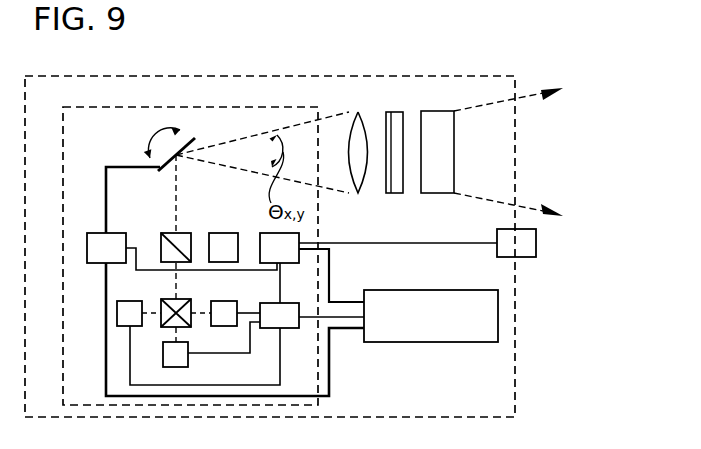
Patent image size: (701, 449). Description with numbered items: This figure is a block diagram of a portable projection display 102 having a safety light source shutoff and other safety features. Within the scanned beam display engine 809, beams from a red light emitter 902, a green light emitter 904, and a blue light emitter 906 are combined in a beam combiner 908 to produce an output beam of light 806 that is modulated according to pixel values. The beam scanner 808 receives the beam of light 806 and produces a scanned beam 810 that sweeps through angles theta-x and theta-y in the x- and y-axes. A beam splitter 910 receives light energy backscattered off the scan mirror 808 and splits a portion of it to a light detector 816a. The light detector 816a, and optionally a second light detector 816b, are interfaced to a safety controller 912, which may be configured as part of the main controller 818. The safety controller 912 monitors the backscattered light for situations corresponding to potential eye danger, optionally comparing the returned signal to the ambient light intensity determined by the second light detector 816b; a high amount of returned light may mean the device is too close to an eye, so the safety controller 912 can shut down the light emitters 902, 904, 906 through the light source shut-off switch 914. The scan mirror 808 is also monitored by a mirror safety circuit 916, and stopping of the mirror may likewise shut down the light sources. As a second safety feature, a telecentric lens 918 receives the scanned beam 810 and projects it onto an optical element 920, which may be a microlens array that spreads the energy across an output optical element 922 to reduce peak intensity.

The scanned beam display system 102 is at (413, 76).
The scanned beam display engine 809 is at (117, 106).
The beam scanner 808 is at (193, 139).
The scanned beam 810 is at (232, 140).
The telecentric lens 918 is at (355, 122).
The optical element 920 is at (386, 112).
The output optical element 922 is at (432, 111).
The beam of light 806 is at (175, 196).
The beam splitter 910 is at (161, 243).
The light detector 816a is at (222, 233).
The second light detector 816b is at (497, 250).
The mirror safety circuit 916 is at (225, 281).
The safety controller 912 is at (378, 268).
The light source shut-off switch 914 is at (247, 344).
The red light emitter 902 is at (124, 301).
The blue light emitter 906 is at (227, 301).
The green light emitter 904 is at (188, 357).
The beam combiner 908 is at (161, 322).
The controller 818 is at (430, 342).